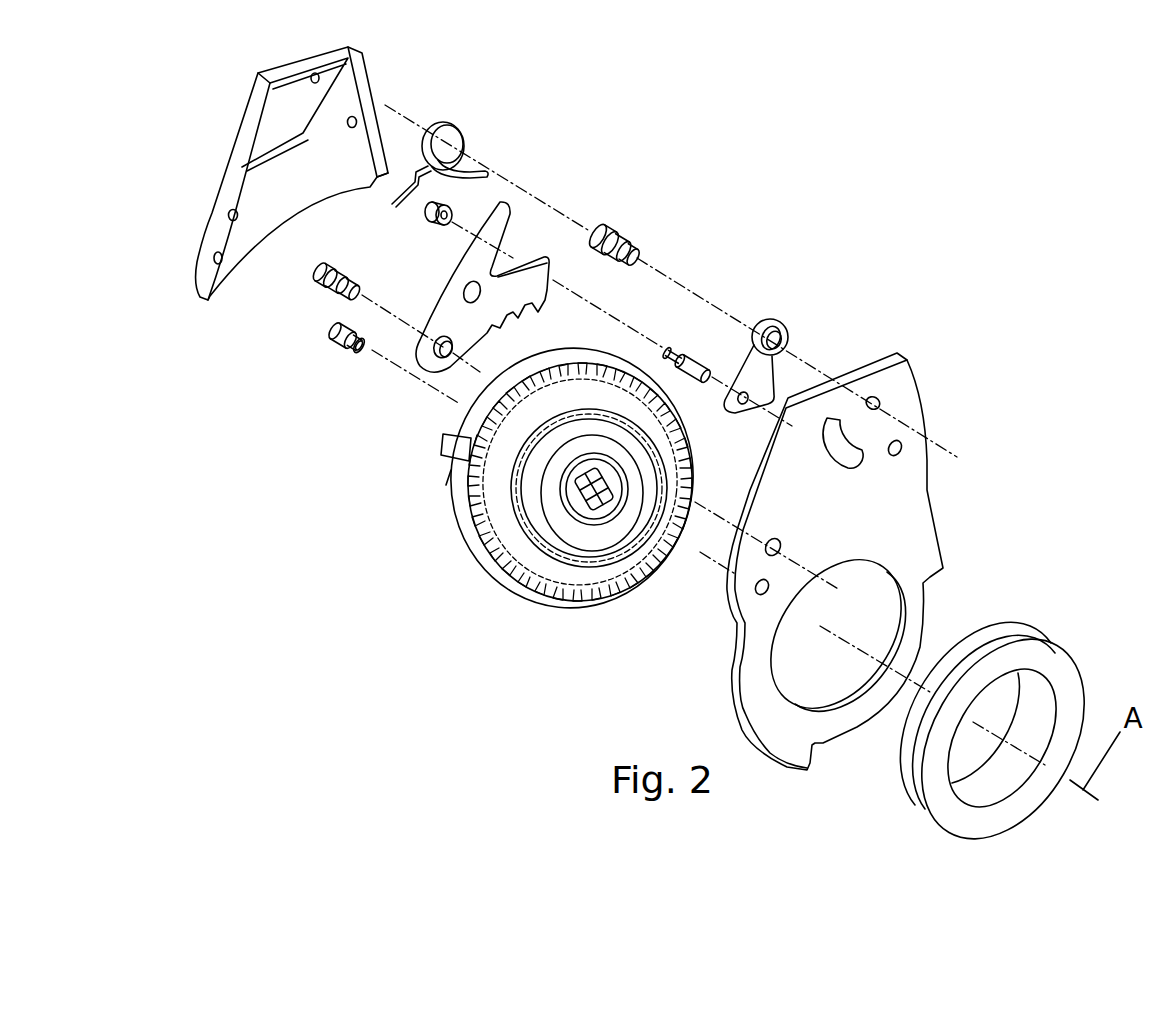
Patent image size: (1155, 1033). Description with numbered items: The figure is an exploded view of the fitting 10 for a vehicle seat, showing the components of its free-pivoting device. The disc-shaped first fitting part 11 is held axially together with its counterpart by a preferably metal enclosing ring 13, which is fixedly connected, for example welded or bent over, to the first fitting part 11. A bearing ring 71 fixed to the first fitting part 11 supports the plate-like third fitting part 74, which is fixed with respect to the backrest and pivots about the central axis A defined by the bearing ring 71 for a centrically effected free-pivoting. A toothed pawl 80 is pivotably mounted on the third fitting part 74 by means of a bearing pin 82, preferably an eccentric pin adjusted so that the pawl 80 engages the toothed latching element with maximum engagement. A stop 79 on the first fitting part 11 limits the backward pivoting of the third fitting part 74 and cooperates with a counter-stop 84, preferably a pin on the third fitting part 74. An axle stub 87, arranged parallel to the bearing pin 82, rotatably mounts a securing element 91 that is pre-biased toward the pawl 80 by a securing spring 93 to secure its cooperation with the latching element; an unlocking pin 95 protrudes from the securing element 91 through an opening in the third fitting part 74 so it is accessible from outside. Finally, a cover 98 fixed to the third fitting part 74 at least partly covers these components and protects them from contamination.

The fitting 10 is at (699, 246).
The first fitting part 11 is at (600, 596).
The enclosing ring 13 is at (450, 467).
The bearing ring 71 is at (1043, 655).
The third fitting part 74 is at (895, 507).
The stop 79 is at (453, 442).
The pawl 80 is at (537, 283).
The bearing pin 82 is at (318, 287).
The counter-stop 84 is at (330, 345).
The axle stub 87 is at (613, 223).
The securing element 91 is at (753, 380).
The securing spring 93 is at (458, 128).
The unlocking pin 95 is at (695, 357).
The cover 98 is at (365, 82).